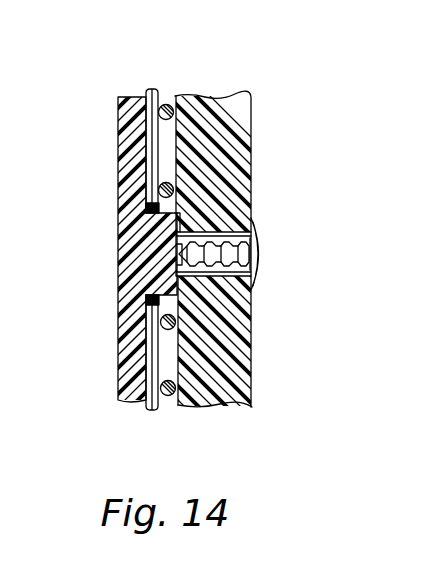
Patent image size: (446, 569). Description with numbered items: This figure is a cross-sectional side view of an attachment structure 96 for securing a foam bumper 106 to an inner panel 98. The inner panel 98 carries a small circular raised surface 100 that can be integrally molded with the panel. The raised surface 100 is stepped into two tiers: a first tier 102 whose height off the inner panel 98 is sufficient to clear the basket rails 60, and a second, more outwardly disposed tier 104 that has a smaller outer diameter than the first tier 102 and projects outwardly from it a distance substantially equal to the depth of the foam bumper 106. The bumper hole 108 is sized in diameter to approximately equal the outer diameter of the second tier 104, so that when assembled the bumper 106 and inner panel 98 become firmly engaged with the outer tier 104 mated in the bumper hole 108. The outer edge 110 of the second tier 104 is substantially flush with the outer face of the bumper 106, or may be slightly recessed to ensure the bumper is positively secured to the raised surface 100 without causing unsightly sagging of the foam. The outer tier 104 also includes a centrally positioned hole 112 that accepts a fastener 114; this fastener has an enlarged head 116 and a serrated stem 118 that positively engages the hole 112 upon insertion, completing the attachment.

The basket rails 60 is at (172, 184).
The attachment structure 96 is at (285, 112).
The inner panel 98 is at (107, 190).
The raised surface 100 is at (155, 196).
The first tier 102 is at (162, 318).
The second tier 104 is at (228, 280).
The foam bumper 106 is at (253, 165).
The bumper hole 108 is at (240, 236).
The outer edge 110 is at (265, 268).
The hole 112 is at (180, 250).
The fastener 114 is at (278, 240).
The enlarged head 116 is at (262, 258).
The serrated stem 118 is at (212, 233).